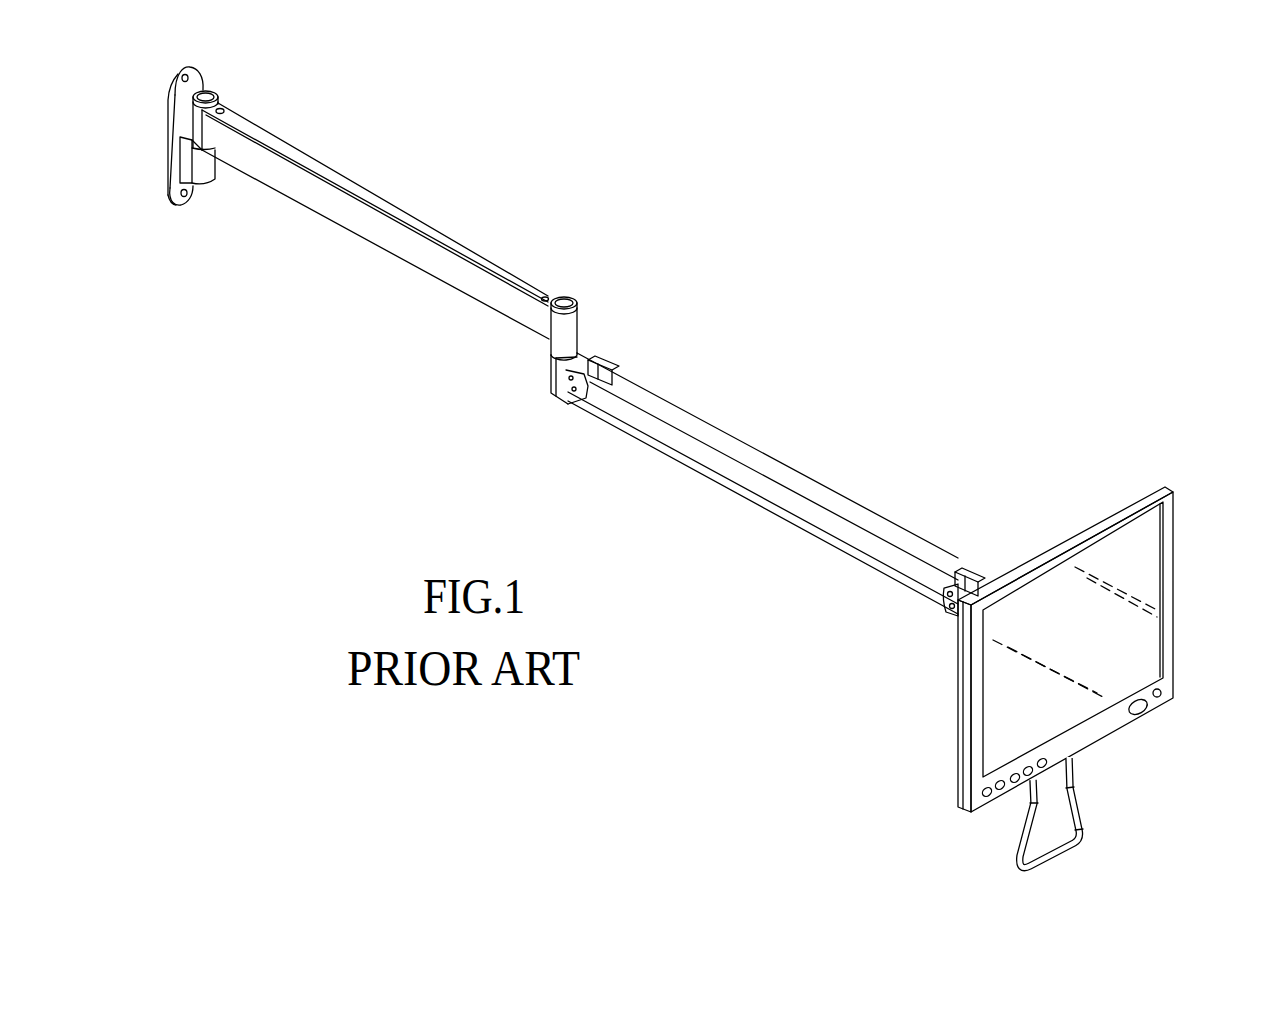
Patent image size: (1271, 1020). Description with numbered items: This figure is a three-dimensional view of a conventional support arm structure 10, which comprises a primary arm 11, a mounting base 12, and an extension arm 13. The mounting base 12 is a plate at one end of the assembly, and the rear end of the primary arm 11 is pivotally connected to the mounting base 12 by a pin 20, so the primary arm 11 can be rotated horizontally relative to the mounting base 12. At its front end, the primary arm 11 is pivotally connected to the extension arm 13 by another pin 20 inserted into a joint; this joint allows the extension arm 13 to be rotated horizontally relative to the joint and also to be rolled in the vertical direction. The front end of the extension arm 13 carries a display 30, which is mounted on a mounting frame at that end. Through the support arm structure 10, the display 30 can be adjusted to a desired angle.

The support arm structure 10 is at (404, 180).
The primary arm 11 is at (374, 237).
The mounting base 12 is at (168, 131).
The extension arm 13 is at (743, 500).
The pin 20 is at (208, 92).
The display 30 is at (1070, 702).